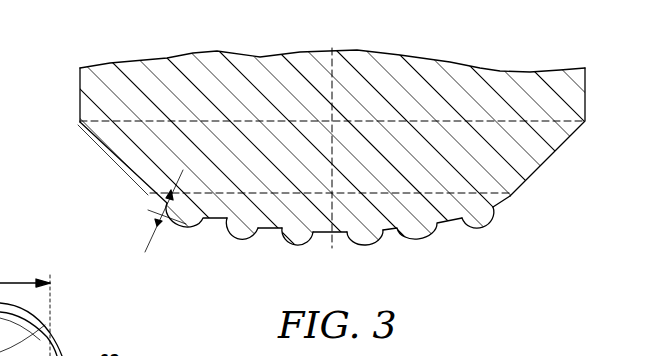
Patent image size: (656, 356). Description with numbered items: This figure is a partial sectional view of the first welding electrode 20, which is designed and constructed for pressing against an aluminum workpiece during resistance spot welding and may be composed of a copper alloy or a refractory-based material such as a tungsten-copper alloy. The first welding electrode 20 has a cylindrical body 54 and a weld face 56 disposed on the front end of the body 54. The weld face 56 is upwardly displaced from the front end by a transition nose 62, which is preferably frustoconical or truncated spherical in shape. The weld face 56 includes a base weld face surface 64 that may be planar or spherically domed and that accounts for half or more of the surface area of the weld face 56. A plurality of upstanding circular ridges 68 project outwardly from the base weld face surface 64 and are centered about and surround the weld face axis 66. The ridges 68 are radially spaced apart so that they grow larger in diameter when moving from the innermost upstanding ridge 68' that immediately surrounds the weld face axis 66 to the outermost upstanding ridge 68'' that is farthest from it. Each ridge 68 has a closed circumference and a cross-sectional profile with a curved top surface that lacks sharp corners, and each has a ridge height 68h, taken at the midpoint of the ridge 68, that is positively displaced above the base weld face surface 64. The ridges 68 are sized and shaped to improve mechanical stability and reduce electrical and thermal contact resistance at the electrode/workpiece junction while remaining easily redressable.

The first welding electrode 20 is at (612, 98).
The body 54 is at (100, 87).
The weld face 56 is at (397, 230).
The transition nose 62 is at (538, 150).
The base weld face surface 64 is at (510, 198).
The weld face axis 66 is at (333, 72).
The upstanding circular ridges 68 is at (257, 268).
The innermost upstanding ridge 68' is at (357, 263).
The outermost upstanding ridge 68'' is at (492, 245).
The ridge height 68h is at (166, 203).